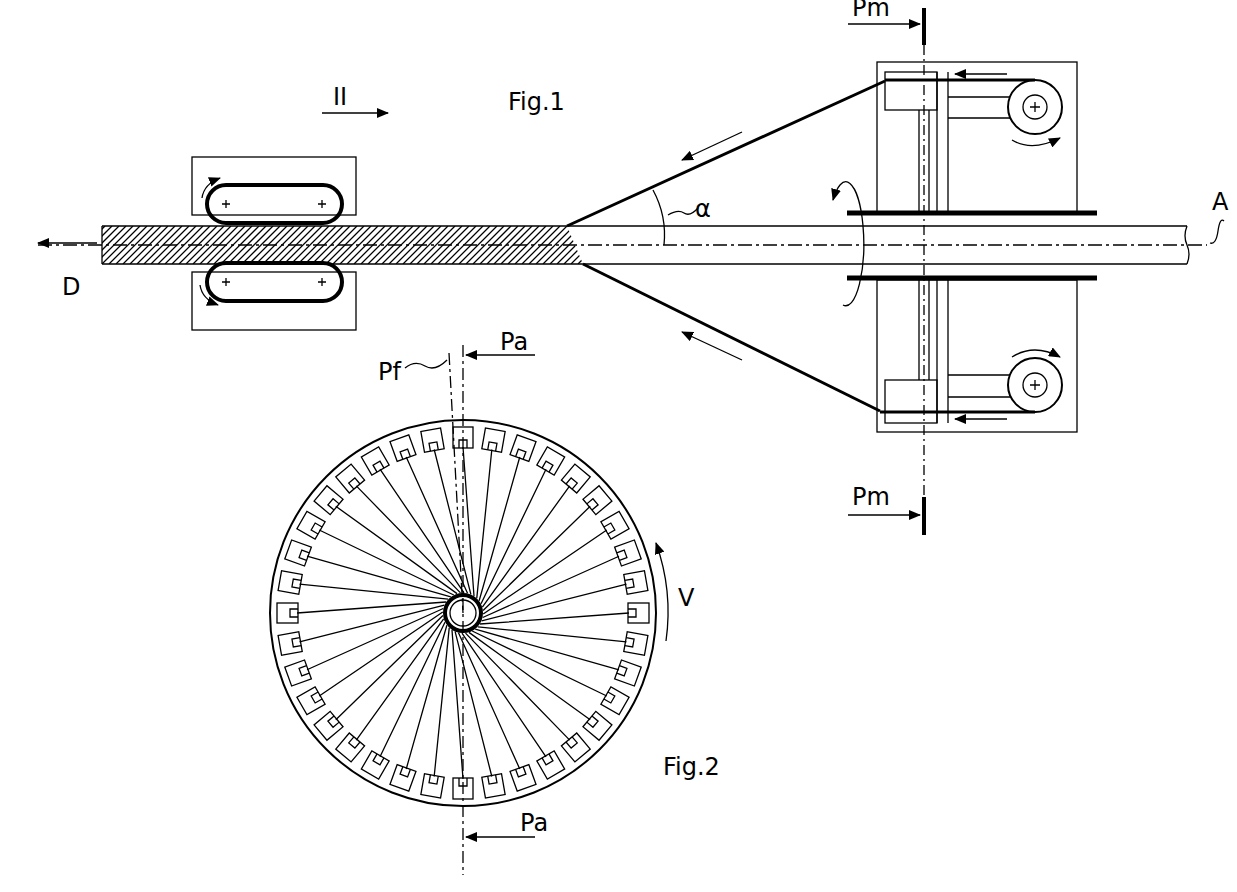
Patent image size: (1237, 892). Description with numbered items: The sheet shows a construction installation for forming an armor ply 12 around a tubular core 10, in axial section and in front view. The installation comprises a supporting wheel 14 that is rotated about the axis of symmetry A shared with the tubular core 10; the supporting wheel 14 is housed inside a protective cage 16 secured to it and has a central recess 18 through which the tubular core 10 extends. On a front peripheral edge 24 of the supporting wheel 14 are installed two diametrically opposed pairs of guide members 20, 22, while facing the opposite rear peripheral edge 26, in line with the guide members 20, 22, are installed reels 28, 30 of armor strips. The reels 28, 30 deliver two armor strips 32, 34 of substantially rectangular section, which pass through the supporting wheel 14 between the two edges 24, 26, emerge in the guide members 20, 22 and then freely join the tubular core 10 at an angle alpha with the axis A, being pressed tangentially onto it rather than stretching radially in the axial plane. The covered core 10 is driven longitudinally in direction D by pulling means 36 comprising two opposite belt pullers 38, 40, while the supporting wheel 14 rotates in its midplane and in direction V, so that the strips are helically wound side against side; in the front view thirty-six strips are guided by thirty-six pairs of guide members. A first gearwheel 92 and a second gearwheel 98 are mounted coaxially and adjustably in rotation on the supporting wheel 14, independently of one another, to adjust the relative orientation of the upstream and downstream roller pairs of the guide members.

In FIG. 1, the tubular core 10 is at (578, 264).
In FIG. 2, the tubular core 10 is at (406, 594).
In FIG. 1, the armor ply 12 is at (167, 266).
In FIG. 2, the armor ply 12 is at (290, 608).
In FIG. 1, the supporting wheel 14 is at (948, 146).
In FIG. 2, the supporting wheel 14 is at (567, 438).
In FIG. 1, the protective cage 16 is at (1078, 86).
In FIG. 1, the central recess 18 is at (820, 254).
In FIG. 1, the pair of guide members 20 is at (907, 432).
In FIG. 2, the pair of guide members 20 is at (460, 804).
In FIG. 1, the pair of guide members 22 is at (882, 68).
In FIG. 2, the pair of guide members 22 is at (476, 426).
In FIG. 1, the front peripheral edge 24 is at (922, 98).
In FIG. 1, the rear peripheral edge 26 is at (986, 74).
In FIG. 1, the reel of armor strip 28 is at (1062, 378).
In FIG. 1, the reel of armor strip 30 is at (1058, 106).
In FIG. 1, the armor strip 32 is at (766, 366).
In FIG. 2, the armor strip 32 is at (386, 768).
In FIG. 1, the armor strip 34 is at (788, 120).
In FIG. 2, the armor strip 34 is at (433, 438).
In FIG. 1, the pulling means 36 is at (356, 164).
In FIG. 1, the belt puller 38 is at (272, 302).
In FIG. 1, the belt puller 40 is at (272, 184).
In FIG. 1, the first gearwheel 92 is at (930, 184).
In FIG. 1, the second gearwheel 98 is at (930, 318).